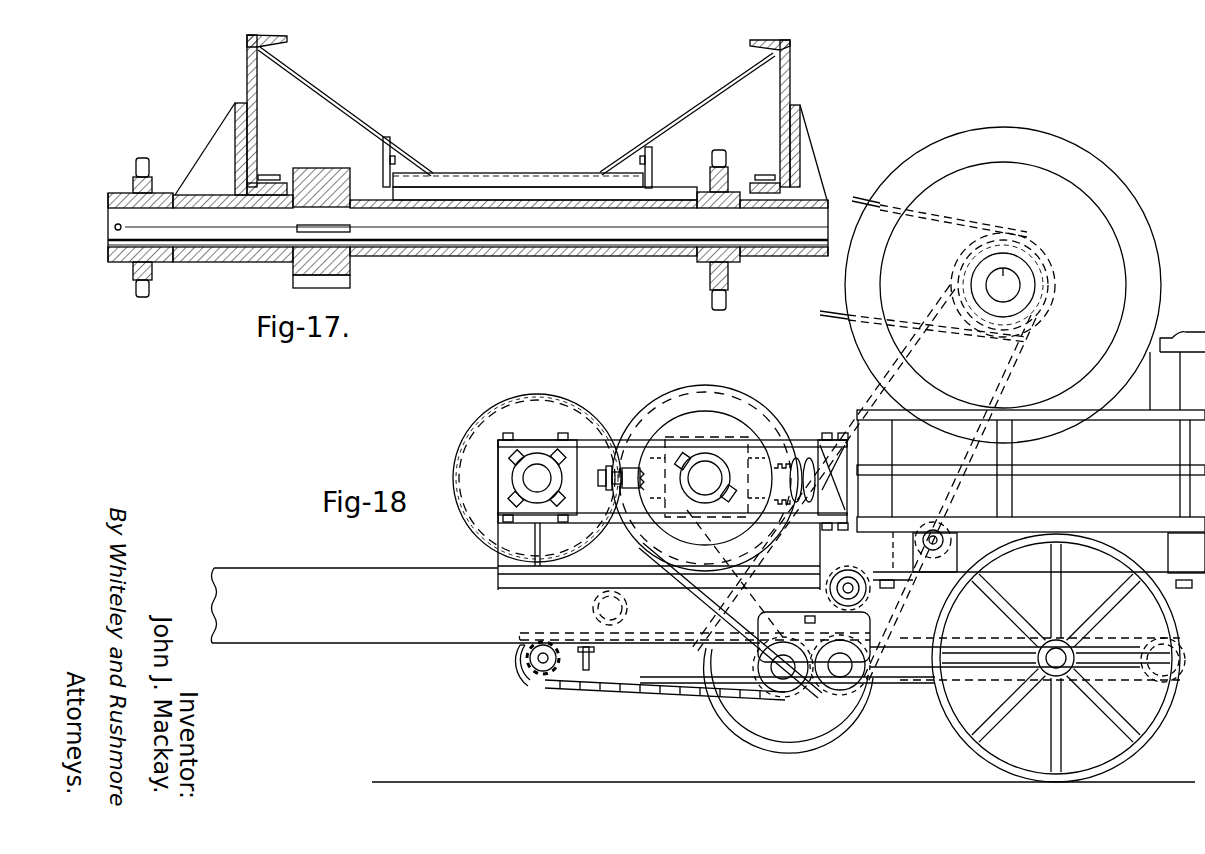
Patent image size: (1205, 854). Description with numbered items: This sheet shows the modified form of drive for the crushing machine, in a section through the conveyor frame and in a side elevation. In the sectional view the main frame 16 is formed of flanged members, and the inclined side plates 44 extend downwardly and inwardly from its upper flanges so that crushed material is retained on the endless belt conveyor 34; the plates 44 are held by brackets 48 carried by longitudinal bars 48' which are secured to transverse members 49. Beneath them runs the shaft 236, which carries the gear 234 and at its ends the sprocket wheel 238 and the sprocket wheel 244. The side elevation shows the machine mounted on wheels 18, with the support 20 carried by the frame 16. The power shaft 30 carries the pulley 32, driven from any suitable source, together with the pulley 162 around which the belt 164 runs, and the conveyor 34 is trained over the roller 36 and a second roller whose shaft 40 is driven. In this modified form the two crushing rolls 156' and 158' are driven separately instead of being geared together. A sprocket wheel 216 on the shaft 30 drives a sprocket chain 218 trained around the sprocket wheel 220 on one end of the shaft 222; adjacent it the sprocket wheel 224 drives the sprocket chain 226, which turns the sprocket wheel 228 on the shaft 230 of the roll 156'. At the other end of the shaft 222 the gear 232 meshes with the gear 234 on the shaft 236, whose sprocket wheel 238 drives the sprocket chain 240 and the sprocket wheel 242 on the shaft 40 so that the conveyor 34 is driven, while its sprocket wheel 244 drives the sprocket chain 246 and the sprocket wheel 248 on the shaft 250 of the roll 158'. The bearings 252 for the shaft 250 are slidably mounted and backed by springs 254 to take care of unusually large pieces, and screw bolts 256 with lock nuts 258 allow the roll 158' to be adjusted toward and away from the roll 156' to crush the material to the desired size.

In FIG. 17, the main frame 16 is at (257, 118).
In FIG. 18, the main frame 16 is at (383, 640).
In FIG. 18, the wheels 18 is at (1148, 738).
In FIG. 18, the support 20 is at (872, 413).
In FIG. 18, the shaft 30 is at (1012, 285).
In FIG. 18, the pulley 32 is at (1150, 240).
In FIG. 17, the endless belt conveyor 34 is at (514, 173).
In FIG. 18, the endless belt conveyor 34 is at (957, 685).
In FIG. 18, the roller 36 is at (1158, 678).
In FIG. 18, the shaft 40 is at (543, 672).
In FIG. 17, the inclined side plates 44 is at (328, 93).
In FIG. 17, the brackets 48 is at (515, 162).
In FIG. 17, the longitudinal bars 48' is at (515, 161).
In FIG. 17, the transverse members 49 is at (567, 197).
In FIG. 18, the transverse members 49 is at (590, 666).
In FIG. 18, the crushing roll 156' is at (522, 478).
In FIG. 18, the crushing roll 158' is at (673, 458).
In FIG. 18, the pulley 162 is at (962, 256).
In FIG. 18, the belt 164 is at (858, 196).
In FIG. 18, the sprocket wheel 216 is at (1010, 325).
In FIG. 18, the sprocket chain 218 is at (878, 397).
In FIG. 18, the sprocket wheel 220 is at (776, 746).
In FIG. 18, the shaft 222 is at (783, 680).
In FIG. 18, the sprocket wheel 224 is at (707, 704).
In FIG. 18, the sprocket chain 226 is at (705, 657).
In FIG. 18, the sprocket wheel 228 is at (530, 397).
In FIG. 18, the shaft 230 is at (533, 483).
In FIG. 18, the gear 232 is at (792, 690).
In FIG. 17, the gear 234 is at (350, 281).
In FIG. 17, the shaft 236 is at (120, 217).
In FIG. 18, the shaft 236 is at (862, 690).
In FIG. 17, the sprocket wheel 238 is at (728, 283).
In FIG. 18, the sprocket wheel 238 is at (868, 686).
In FIG. 18, the sprocket chain 240 is at (597, 694).
In FIG. 18, the sprocket wheel 242 is at (522, 678).
In FIG. 17, the sprocket wheel 244 is at (145, 297).
In FIG. 18, the sprocket wheel 244 is at (853, 627).
In FIG. 18, the sprocket chain 246 is at (828, 592).
In FIG. 18, the sprocket wheel 248 is at (725, 396).
In FIG. 18, the shaft 250 is at (705, 472).
In FIG. 18, the bearings 252 is at (677, 455).
In FIG. 18, the springs 254 is at (800, 460).
In FIG. 18, the screw bolts 256 is at (610, 478).
In FIG. 18, the lock nuts 258 is at (622, 510).